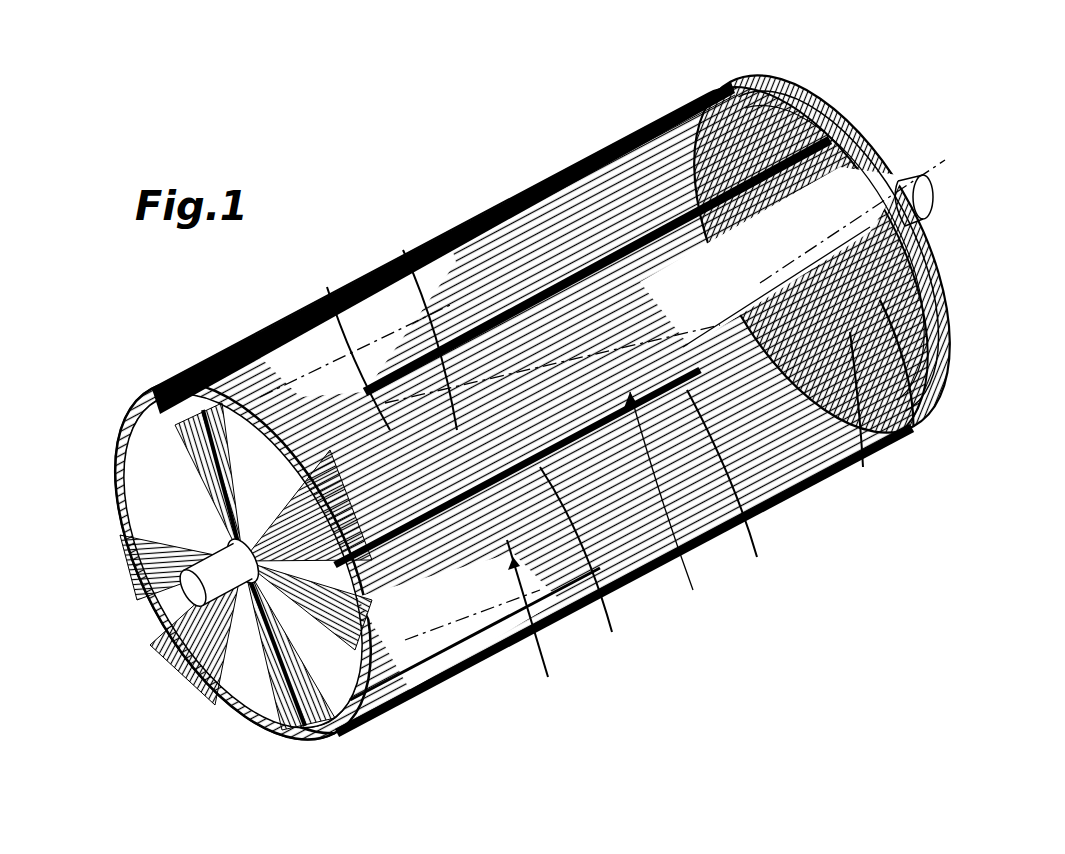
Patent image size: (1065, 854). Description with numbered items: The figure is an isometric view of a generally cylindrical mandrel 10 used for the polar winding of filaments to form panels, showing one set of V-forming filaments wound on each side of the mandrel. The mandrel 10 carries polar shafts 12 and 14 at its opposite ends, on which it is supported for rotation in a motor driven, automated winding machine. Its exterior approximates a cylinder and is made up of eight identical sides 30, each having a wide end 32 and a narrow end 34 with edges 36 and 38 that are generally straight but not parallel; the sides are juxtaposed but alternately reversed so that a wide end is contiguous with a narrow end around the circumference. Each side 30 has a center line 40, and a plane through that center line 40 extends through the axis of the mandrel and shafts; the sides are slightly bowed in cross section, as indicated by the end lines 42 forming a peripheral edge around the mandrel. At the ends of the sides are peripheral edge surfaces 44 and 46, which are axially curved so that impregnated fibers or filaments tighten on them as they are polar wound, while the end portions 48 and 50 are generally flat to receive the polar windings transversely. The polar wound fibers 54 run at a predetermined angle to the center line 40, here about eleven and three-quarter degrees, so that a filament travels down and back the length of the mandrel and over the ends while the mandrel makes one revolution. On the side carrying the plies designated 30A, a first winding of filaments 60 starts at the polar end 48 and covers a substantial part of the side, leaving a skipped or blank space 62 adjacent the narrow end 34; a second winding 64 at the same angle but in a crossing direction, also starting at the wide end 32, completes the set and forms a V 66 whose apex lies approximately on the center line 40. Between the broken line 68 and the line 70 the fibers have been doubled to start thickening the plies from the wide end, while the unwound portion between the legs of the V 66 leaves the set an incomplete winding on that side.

The mandrel 10 is at (907, 163).
The polar shaft 12 is at (152, 617).
The polar shaft 14 is at (937, 197).
The side 30 is at (927, 238).
The plies on a side 30A is at (690, 552).
The wide end 32 is at (755, 86).
The narrow end 34 is at (156, 407).
The edge 36 is at (838, 130).
The edge 38 is at (943, 304).
The center line 40 is at (500, 683).
The end lines 42 is at (251, 342).
The peripheral edge surface 44 is at (400, 716).
The peripheral edge surface 46 is at (943, 334).
The end portion 48 is at (260, 703).
The end portion 50 is at (937, 272).
The fibers 54 is at (548, 677).
The first winding of filaments 60 is at (757, 557).
The skipped or blank space 62 is at (863, 467).
The second winding 64 is at (327, 295).
The V 66 is at (733, 311).
The broken line 68 is at (403, 253).
The line 70 is at (612, 632).